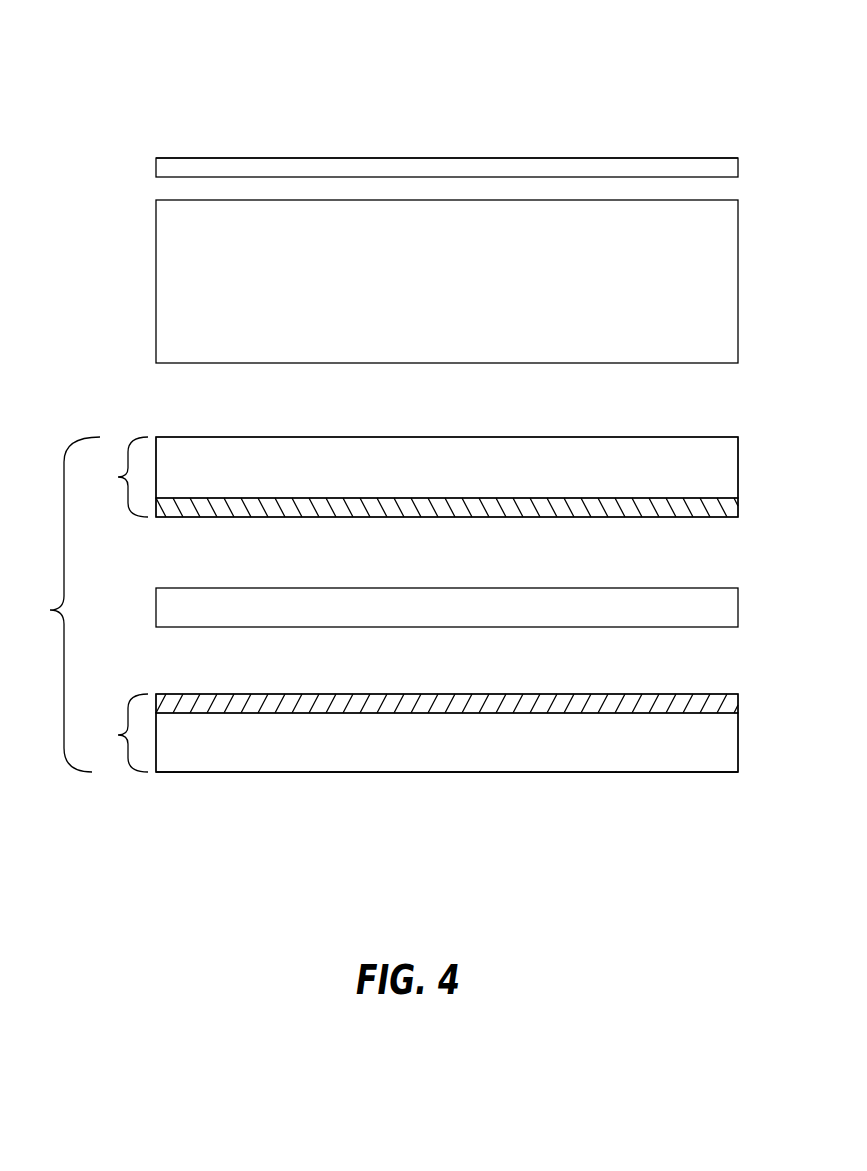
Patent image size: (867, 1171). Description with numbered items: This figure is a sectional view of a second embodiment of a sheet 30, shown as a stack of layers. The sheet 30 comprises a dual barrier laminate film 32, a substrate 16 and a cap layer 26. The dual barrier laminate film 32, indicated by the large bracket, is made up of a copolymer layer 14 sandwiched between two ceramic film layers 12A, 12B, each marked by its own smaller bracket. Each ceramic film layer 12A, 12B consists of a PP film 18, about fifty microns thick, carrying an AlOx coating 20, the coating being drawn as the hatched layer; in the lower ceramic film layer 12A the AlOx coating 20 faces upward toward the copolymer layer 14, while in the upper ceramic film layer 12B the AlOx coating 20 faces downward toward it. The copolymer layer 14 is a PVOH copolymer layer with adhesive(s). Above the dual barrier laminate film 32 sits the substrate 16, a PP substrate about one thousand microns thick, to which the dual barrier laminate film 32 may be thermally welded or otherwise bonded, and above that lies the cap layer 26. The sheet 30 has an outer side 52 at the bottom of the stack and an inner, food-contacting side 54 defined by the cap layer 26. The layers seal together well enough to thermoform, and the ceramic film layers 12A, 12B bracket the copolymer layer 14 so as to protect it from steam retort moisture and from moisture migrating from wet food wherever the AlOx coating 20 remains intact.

The sheet 30 is at (724, 58).
The cap layer 26 is at (739, 168).
The inner side 54 is at (449, 158).
The substrate 16 is at (739, 283).
The dual barrier laminate film 32 is at (63, 604).
The ceramic film layer 12B is at (411, 477).
The ceramic film layer 12A is at (411, 733).
The PP film 18 is at (739, 470).
The AlOx coating 20 is at (739, 508).
The copolymer layer 14 is at (739, 610).
The outer side 52 is at (450, 773).